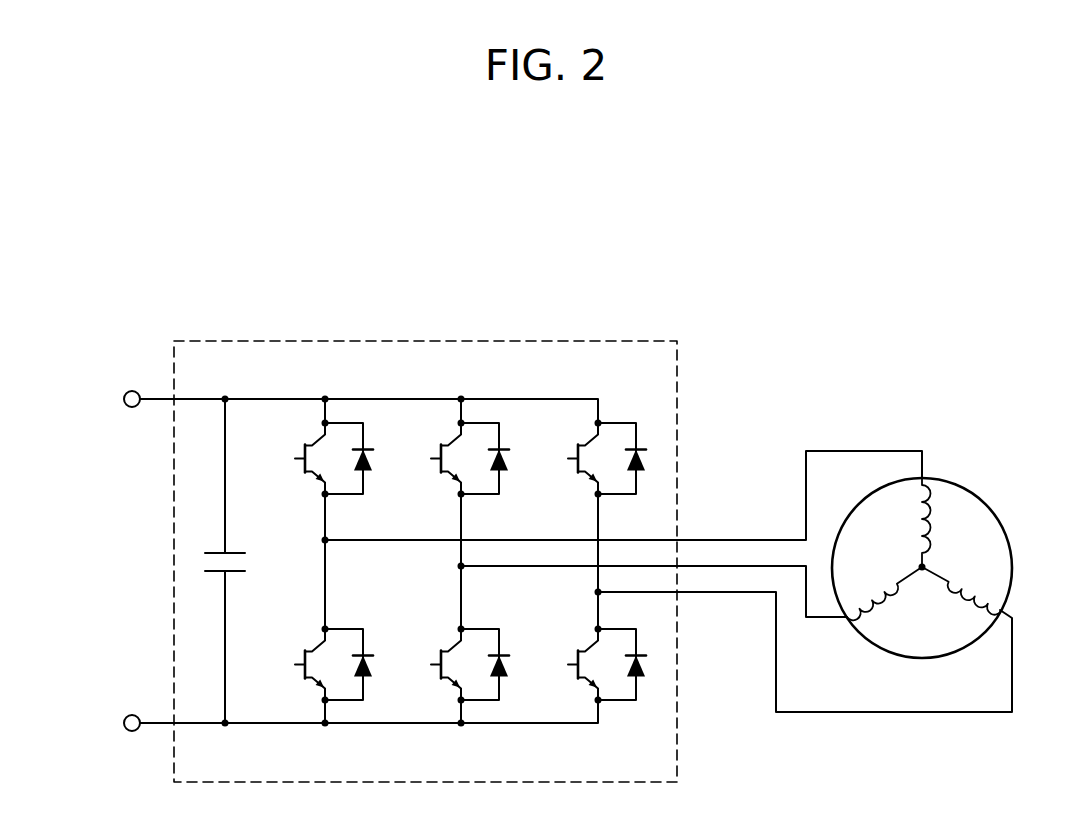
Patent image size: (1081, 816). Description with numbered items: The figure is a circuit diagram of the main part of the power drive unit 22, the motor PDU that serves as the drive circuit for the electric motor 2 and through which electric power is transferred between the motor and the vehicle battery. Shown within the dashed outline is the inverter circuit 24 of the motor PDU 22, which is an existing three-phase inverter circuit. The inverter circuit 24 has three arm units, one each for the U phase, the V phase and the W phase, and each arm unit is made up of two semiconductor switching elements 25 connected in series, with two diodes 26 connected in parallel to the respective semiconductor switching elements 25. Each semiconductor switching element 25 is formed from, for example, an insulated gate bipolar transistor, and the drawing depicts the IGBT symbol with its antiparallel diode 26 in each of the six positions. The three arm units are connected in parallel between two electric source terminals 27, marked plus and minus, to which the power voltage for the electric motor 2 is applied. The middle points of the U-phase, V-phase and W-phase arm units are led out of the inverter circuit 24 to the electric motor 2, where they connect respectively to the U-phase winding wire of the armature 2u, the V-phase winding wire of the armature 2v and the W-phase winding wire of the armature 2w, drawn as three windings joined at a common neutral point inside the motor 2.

The electric motor 2 is at (966, 488).
The U-phase winding wire of the armature 2u is at (918, 527).
The V-phase winding wire of the armature 2v is at (890, 597).
The W-phase winding wire of the armature 2w is at (955, 597).
The power drive unit 22 is at (663, 303).
The inverter circuit 24 is at (572, 340).
The semiconductor switching element 25 is at (315, 441).
The diode 26 is at (373, 459).
The electric source terminal 27 is at (132, 390).